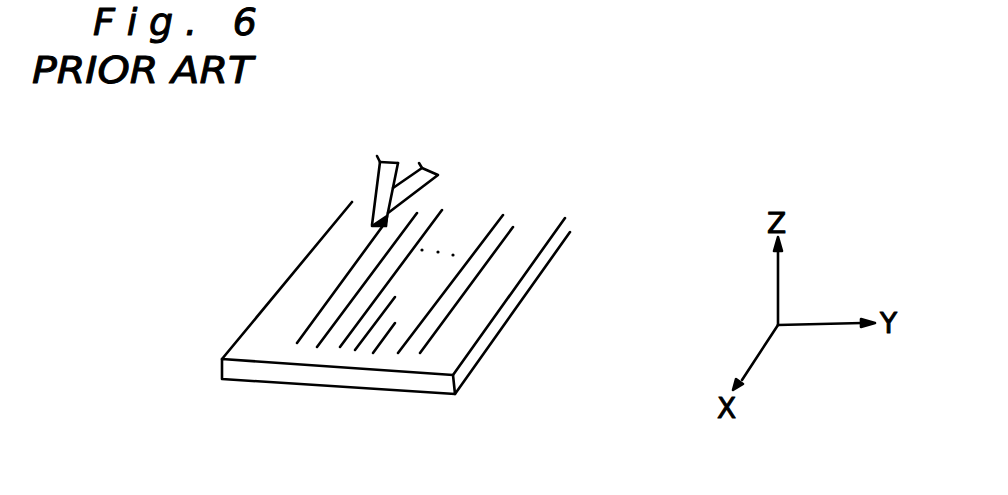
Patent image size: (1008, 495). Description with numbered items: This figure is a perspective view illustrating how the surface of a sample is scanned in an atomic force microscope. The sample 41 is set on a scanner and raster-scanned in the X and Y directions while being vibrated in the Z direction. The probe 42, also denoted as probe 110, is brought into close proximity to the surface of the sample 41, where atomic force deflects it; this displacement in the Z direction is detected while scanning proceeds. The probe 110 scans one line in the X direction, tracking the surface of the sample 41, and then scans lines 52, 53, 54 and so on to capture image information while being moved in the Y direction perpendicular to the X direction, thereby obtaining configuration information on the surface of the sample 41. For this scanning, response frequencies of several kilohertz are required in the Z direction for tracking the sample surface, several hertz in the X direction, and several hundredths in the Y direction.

The sample 41 is at (252, 320).
The probe 42 is at (360, 150).
The probe 110 is at (380, 170).
The line 52 is at (303, 325).
The line 53 is at (327, 330).
The line 54 is at (343, 340).